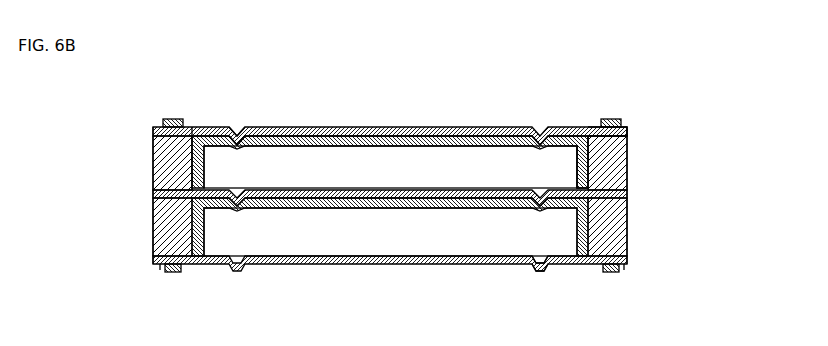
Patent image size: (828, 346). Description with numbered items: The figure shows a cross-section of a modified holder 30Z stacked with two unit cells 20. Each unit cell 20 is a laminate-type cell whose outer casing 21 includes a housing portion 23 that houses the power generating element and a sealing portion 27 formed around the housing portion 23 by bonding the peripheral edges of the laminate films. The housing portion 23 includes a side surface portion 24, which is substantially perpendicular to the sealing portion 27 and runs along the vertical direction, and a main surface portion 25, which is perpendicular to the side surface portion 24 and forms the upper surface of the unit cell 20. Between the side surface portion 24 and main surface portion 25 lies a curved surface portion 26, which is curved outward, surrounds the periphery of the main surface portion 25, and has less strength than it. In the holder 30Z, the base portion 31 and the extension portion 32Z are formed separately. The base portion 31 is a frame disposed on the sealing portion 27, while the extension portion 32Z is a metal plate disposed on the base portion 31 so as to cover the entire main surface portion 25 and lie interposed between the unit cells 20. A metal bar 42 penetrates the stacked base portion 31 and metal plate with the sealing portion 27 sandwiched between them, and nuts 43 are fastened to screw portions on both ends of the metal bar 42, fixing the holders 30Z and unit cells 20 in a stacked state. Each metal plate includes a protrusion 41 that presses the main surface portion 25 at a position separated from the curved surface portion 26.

The unit cell 20 is at (370, 176).
The outer casing 21 is at (657, 195).
The housing portion 23 is at (630, 158).
The side surface portion 24 is at (153, 167).
The main surface portion 25 is at (292, 126).
The curved surface portion 26 is at (192, 126).
The sealing portion 27 is at (153, 201).
The holder 30Z is at (600, 71).
The base portion 31 is at (597, 125).
The extension portion 32Z is at (425, 180).
The protrusion 41 is at (239, 125).
The metal bar 42 is at (173, 273).
The nut 43 is at (173, 118).